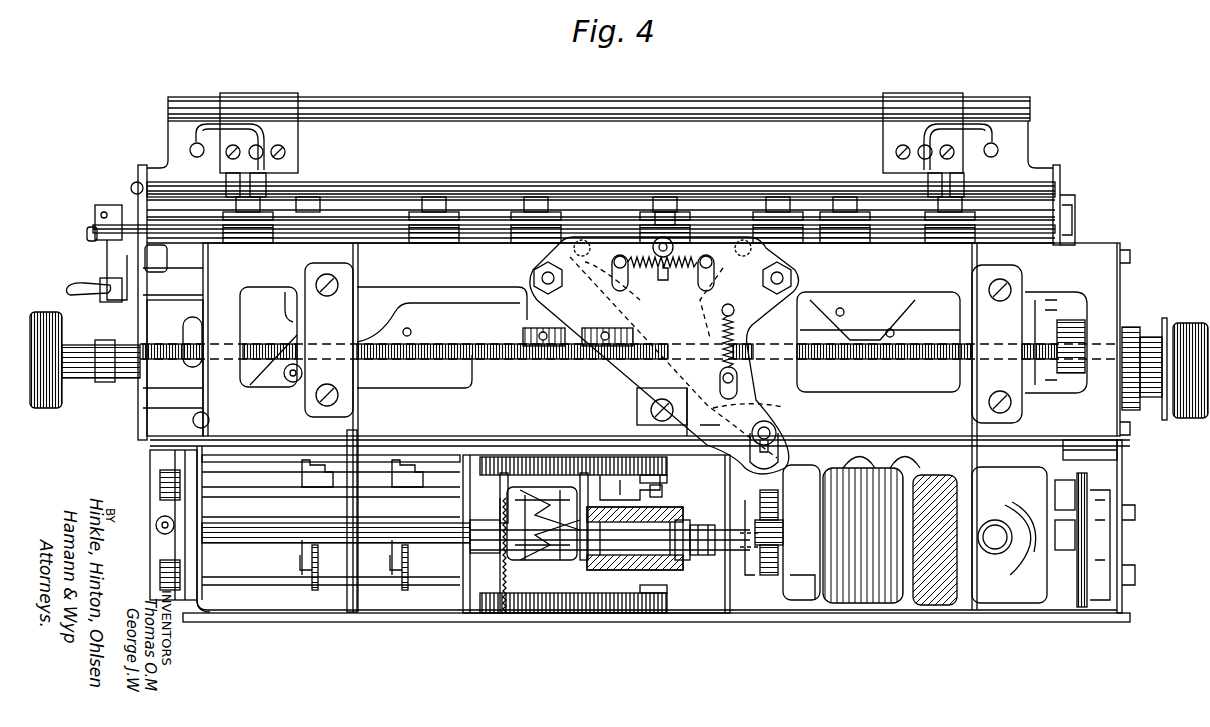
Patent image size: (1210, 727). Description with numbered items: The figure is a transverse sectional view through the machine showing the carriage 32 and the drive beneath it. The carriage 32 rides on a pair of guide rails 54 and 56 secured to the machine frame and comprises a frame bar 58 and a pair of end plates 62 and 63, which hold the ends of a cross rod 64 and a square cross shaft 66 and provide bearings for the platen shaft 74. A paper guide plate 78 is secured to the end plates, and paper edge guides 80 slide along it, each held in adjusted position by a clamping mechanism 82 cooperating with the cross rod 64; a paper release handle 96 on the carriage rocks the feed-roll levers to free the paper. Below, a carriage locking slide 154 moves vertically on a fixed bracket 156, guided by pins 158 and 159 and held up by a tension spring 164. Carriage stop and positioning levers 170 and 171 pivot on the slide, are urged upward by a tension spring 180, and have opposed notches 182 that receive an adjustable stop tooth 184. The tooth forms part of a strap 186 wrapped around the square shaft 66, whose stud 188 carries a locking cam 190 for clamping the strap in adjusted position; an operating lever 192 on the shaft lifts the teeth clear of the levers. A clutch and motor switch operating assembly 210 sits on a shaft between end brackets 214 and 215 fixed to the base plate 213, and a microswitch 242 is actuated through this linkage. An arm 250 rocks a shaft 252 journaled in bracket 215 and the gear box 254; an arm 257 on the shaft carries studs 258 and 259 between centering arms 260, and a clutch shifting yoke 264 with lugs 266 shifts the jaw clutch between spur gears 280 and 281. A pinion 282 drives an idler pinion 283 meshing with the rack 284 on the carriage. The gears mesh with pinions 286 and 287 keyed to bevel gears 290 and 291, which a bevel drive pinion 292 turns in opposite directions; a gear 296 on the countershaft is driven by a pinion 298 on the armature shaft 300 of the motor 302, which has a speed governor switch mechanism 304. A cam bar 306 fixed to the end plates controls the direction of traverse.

The carriage 32 is at (158, 104).
The guide rail 54 is at (222, 250).
The guide rail 56 is at (205, 420).
The frame bar 58 is at (150, 322).
The end plate 62 is at (1062, 172).
The end plate 63 is at (138, 168).
The cross rod 64 is at (620, 183).
The square cross shaft 66 is at (488, 210).
The platen shaft 74 is at (100, 380).
The paper guide plate 78 is at (335, 99).
The paper edge guide 80 is at (270, 94).
The clamping mechanism 82 is at (228, 122).
The paper release handle 96 is at (87, 230).
The carriage locking slide 154 is at (752, 413).
The fixed bracket 156 is at (795, 262).
The guide pin 158 is at (778, 432).
The guide pin 159 is at (652, 258).
The tension spring 164 is at (733, 325).
The carriage stop and positioning lever 170 is at (562, 282).
The carriage stop and positioning lever 171 is at (763, 282).
The tension spring 180 is at (663, 278).
The notch 182 is at (660, 232).
The adjustable stop tooth 184 is at (668, 212).
The strap 186 is at (360, 233).
The stud 188 is at (312, 240).
The locking cam 190 is at (322, 200).
The operating lever 192 is at (72, 288).
The clutch and motor switch operating assembly 210 is at (292, 482).
The base plate 213 is at (300, 615).
The end bracket 214 is at (1124, 612).
The end bracket 215 is at (178, 600).
The microswitch 242 is at (150, 468).
The arm 250 is at (150, 512).
The shaft 252 is at (260, 544).
The gear box 254 is at (460, 598).
The arm 257 is at (606, 472).
The stud 258 is at (550, 470).
The stud 259 is at (592, 470).
The centering arm 260 is at (500, 560).
The clutch shifting yoke 264 is at (590, 613).
The lug 266 is at (520, 492).
The spur gear 280 is at (478, 452).
The spur gear 281 is at (530, 614).
The pinion 282 is at (546, 348).
The idler pinion 283 is at (618, 348).
The rack 284 is at (455, 338).
The pinion 286 is at (667, 466).
The pinion 287 is at (668, 608).
The bevel gear 290 is at (640, 512).
The bevel gear 291 is at (680, 570).
The bevel drive pinion 292 is at (705, 556).
The gear 296 is at (779, 502).
The pinion 298 is at (781, 528).
The armature shaft 300 is at (779, 558).
The motor 302 is at (800, 588).
The speed governor switch mechanism 304 is at (1090, 543).
The cam bar 306 is at (382, 447).